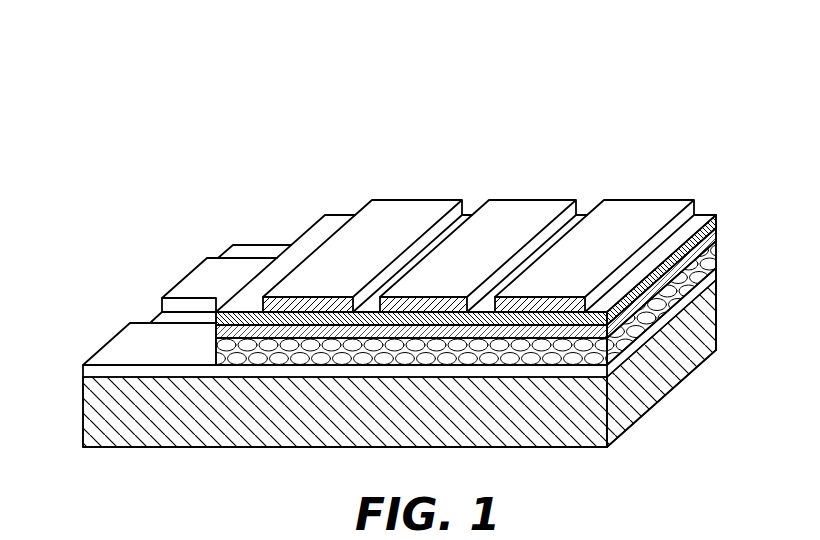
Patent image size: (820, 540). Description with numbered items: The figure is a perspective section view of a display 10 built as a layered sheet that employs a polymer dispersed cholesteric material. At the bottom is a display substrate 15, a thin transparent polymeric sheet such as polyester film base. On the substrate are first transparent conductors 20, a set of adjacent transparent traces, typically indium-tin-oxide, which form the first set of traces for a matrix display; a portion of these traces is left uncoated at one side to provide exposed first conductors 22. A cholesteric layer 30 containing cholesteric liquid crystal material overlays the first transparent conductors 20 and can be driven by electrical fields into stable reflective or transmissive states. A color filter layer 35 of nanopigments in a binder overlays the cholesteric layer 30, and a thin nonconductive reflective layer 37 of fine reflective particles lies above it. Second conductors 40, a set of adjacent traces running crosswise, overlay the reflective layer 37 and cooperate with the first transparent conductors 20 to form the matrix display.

The display 10 is at (236, 85).
The display substrate 15 is at (108, 414).
The first transparent conductors 20 is at (716, 276).
The exposed first conductors 22 is at (205, 287).
The cholesteric layer 30 is at (717, 265).
The color filter layer 35 is at (717, 238).
The reflective layer 37 is at (698, 217).
The second conductors 40 is at (430, 297).